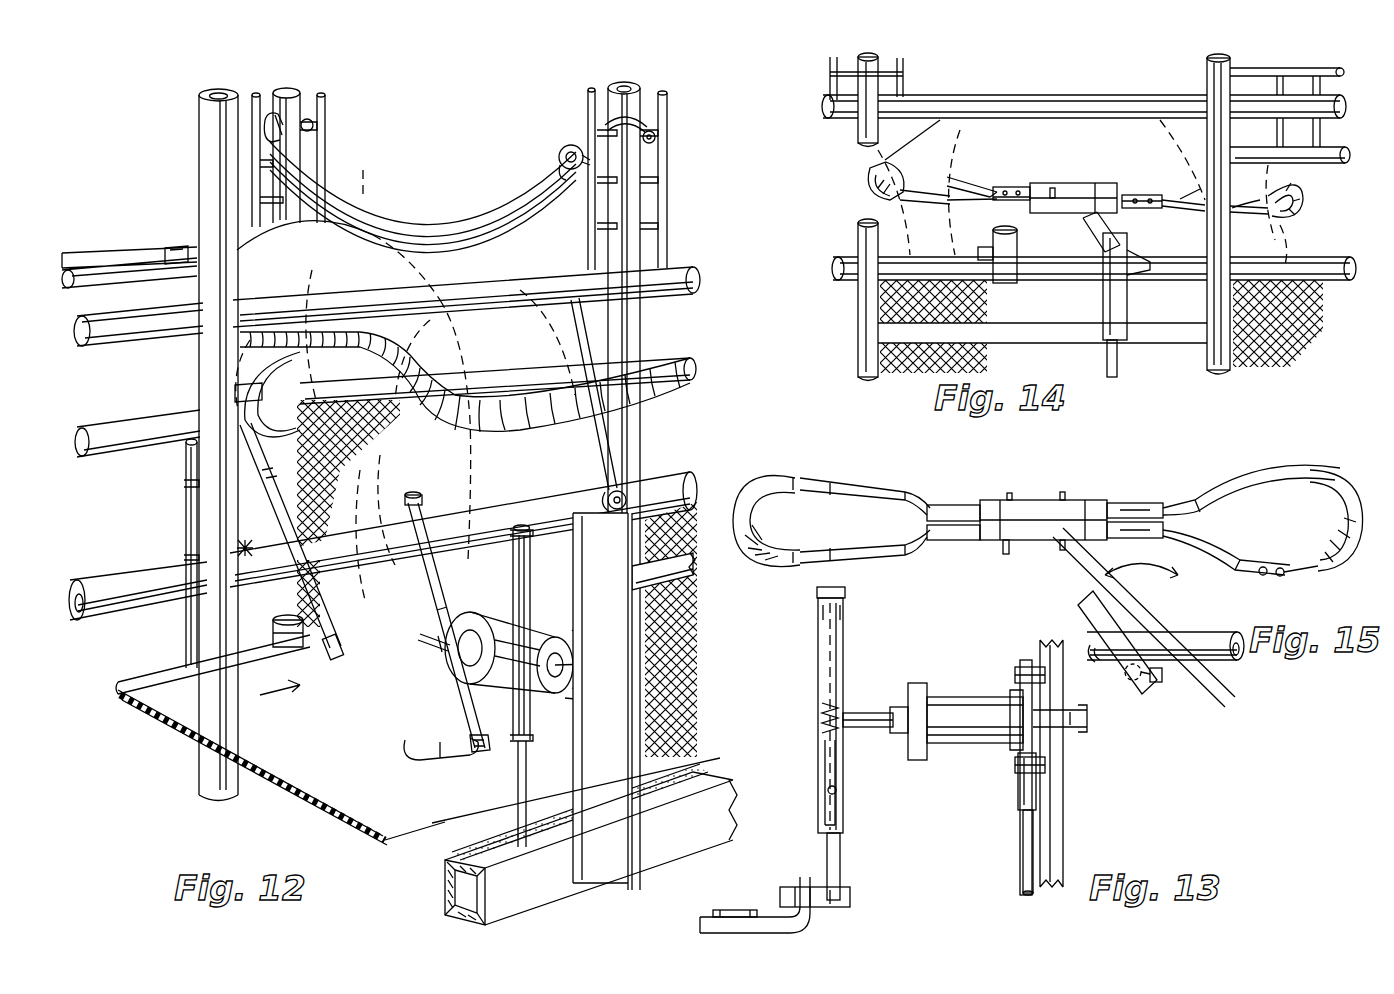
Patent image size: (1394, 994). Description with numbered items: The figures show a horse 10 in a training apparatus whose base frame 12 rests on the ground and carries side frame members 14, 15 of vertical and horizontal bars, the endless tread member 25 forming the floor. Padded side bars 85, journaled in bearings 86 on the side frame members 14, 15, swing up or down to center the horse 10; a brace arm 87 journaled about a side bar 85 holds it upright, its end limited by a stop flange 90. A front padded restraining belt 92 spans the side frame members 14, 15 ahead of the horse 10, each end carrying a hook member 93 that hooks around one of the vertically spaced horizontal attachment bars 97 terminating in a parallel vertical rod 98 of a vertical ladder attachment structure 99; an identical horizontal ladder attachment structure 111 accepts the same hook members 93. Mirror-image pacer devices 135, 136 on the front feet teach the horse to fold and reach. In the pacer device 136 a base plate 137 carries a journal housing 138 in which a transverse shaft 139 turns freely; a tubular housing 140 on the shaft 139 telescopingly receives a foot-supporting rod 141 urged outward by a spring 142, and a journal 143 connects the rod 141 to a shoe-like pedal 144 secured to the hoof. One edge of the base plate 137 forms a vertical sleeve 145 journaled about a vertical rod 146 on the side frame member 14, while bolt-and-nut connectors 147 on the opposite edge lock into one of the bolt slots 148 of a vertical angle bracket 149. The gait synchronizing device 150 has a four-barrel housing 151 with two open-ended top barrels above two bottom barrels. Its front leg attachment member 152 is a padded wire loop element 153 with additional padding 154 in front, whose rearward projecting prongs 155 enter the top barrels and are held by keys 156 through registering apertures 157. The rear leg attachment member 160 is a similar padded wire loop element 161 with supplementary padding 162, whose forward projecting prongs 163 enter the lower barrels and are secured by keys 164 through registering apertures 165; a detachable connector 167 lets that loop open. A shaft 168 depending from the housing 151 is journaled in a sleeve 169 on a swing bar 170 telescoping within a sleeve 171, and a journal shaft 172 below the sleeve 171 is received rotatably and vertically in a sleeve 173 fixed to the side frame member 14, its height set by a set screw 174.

In FIG. 12, the horse 10 is at (480, 475).
In FIG. 14, the horse 10 is at (925, 156).
In FIG. 12, the base frame 12 is at (545, 897).
In FIG. 12, the side frame member 14 is at (130, 590).
In FIG. 14, the side frame member 14 is at (1095, 187).
In FIG. 15, the side frame member 14 is at (1200, 645).
In FIG. 12, the side frame member 15 is at (128, 262).
In FIG. 12, the endless conveyor belt or tread member 25 is at (265, 742).
In FIG. 12, the padded side bar 85 is at (318, 345).
In FIG. 12, the bearing 86 is at (178, 256).
In FIG. 12, the brace arm 87 is at (592, 412).
In FIG. 12, the stop flange 90 is at (606, 496).
In FIG. 12, the front padded restraining belt 92 is at (448, 242).
In FIG. 12, the hook member 93 is at (270, 120).
In FIG. 12, the horizontal attachment bar 97 is at (652, 183).
In FIG. 12, the vertical rod 98 is at (667, 240).
In FIG. 12, the ladder attachment structure 99 is at (648, 179).
In FIG. 14, the ladder attachment structure 111 is at (1265, 72).
In FIG. 12, the pacer or overstepping device 135 is at (243, 560).
In FIG. 12, the pacer or pedal step device 136 is at (471, 674).
In FIG. 13, the pacer or pedal step device 136 is at (910, 761).
In FIG. 12, the base plate 137 is at (555, 693).
In FIG. 13, the base plate 137 is at (1018, 745).
In FIG. 12, the journal housing 138 is at (460, 668).
In FIG. 13, the journal housing 138 is at (1005, 728).
In FIG. 12, the transverse shaft 139 is at (436, 643).
In FIG. 13, the transverse shaft 139 is at (873, 727).
In FIG. 12, the tubular housing 140 is at (290, 487).
In FIG. 13, the tubular housing 140 is at (845, 623).
In FIG. 12, the foot-supporting rod 141 is at (240, 457).
In FIG. 13, the foot-supporting rod 141 is at (838, 820).
In FIG. 13, the spring 142 is at (843, 712).
In FIG. 12, the journal 143 is at (470, 752).
In FIG. 13, the journal 143 is at (825, 907).
In FIG. 12, the foot support or pedal 144 is at (235, 392).
In FIG. 13, the foot support or pedal 144 is at (765, 917).
In FIG. 12, the vertical sleeve 145 is at (187, 548).
In FIG. 13, the vertical sleeve 145 is at (1018, 796).
In FIG. 12, the vertical rod 146 is at (190, 654).
In FIG. 13, the vertical rod 146 is at (1023, 846).
In FIG. 12, the bolt-and-nut connectors 147 is at (585, 628).
In FIG. 13, the bolt-and-nut connectors 147 is at (1015, 678).
In FIG. 12, the bolt slots 148 is at (592, 700).
In FIG. 13, the bolt slots 148 is at (1020, 666).
In FIG. 12, the vertical angle bracket 149 is at (605, 842).
In FIG. 13, the vertical angle bracket 149 is at (1053, 838).
In FIG. 14, the gait synchronizing device 150 is at (1005, 186).
In FIG. 15, the gait synchronizing device 150 is at (965, 498).
In FIG. 14, the four-barrel housing 151 is at (1075, 188).
In FIG. 15, the four-barrel housing 151 is at (1025, 500).
In FIG. 14, the front leg attachment member 152 is at (980, 166).
In FIG. 15, the front leg attachment member 152 is at (912, 480).
In FIG. 14, the padded wire loop element 153 is at (925, 197).
In FIG. 15, the padded wire loop element 153 is at (840, 482).
In FIG. 14, the additional padding 154 is at (868, 172).
In FIG. 15, the additional padding 154 is at (742, 490).
In FIG. 14, the rearward projecting prongs 155 is at (1010, 200).
In FIG. 15, the rearward projecting prongs 155 is at (962, 508).
In FIG. 14, the keys 156 is at (1052, 186).
In FIG. 15, the keys 156 is at (1003, 548).
In FIG. 14, the registering apertures 157 is at (1005, 188).
In FIG. 14, the rear leg attachment member 160 is at (1299, 210).
In FIG. 15, the rear leg attachment member 160 is at (1263, 519).
In FIG. 15, the padded wire loop element 161 is at (1222, 483).
In FIG. 14, the supplementary padding 162 is at (1292, 212).
In FIG. 15, the supplementary padding 162 is at (1340, 512).
In FIG. 14, the forward projecting prongs 163 is at (1165, 212).
In FIG. 15, the forward projecting prongs 163 is at (1133, 505).
In FIG. 14, the keys 164 is at (1118, 206).
In FIG. 15, the keys 164 is at (1108, 500).
In FIG. 14, the registering apertures 165 is at (1132, 196).
In FIG. 15, the detachable connector 167 is at (1283, 576).
In FIG. 15, the shaft 168 is at (1050, 512).
In FIG. 14, the sleeve 169 is at (1060, 226).
In FIG. 14, the swing bar 170 is at (1130, 262).
In FIG. 15, the swing bar 170 is at (1072, 574).
In FIG. 14, the sleeve 171 is at (1098, 252).
In FIG. 15, the sleeve 171 is at (1110, 622).
In FIG. 14, the journal shaft 172 is at (1105, 366).
In FIG. 14, the sleeve 173 is at (1102, 300).
In FIG. 15, the set screw 174 is at (1163, 676).